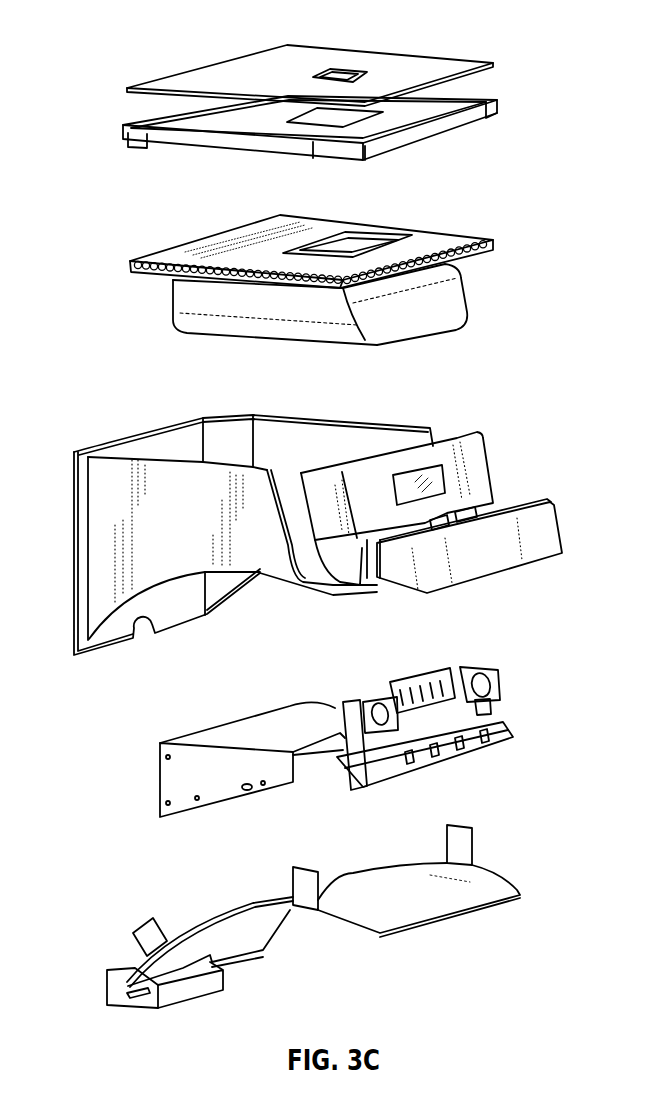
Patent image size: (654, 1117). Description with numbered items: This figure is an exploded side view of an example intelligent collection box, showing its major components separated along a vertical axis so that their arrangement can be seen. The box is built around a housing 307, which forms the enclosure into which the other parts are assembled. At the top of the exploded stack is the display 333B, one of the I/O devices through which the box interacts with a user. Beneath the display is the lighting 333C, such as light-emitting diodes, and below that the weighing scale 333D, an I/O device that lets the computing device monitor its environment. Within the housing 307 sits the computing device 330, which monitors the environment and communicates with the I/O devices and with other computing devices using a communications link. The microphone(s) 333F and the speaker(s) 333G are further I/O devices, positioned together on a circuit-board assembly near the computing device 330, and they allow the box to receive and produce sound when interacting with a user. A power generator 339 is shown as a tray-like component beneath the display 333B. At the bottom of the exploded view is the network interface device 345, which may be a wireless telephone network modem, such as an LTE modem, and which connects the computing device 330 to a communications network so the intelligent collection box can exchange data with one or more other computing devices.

The display 333B is at (197, 72).
The power generator 339 is at (497, 100).
The lighting 333C is at (137, 263).
The weighing scale 333D is at (450, 305).
The housing 307 is at (88, 478).
The microphone 333F is at (562, 517).
The computing device 330 is at (343, 730).
The speaker 333G is at (490, 683).
The network interface device 345 is at (108, 970).